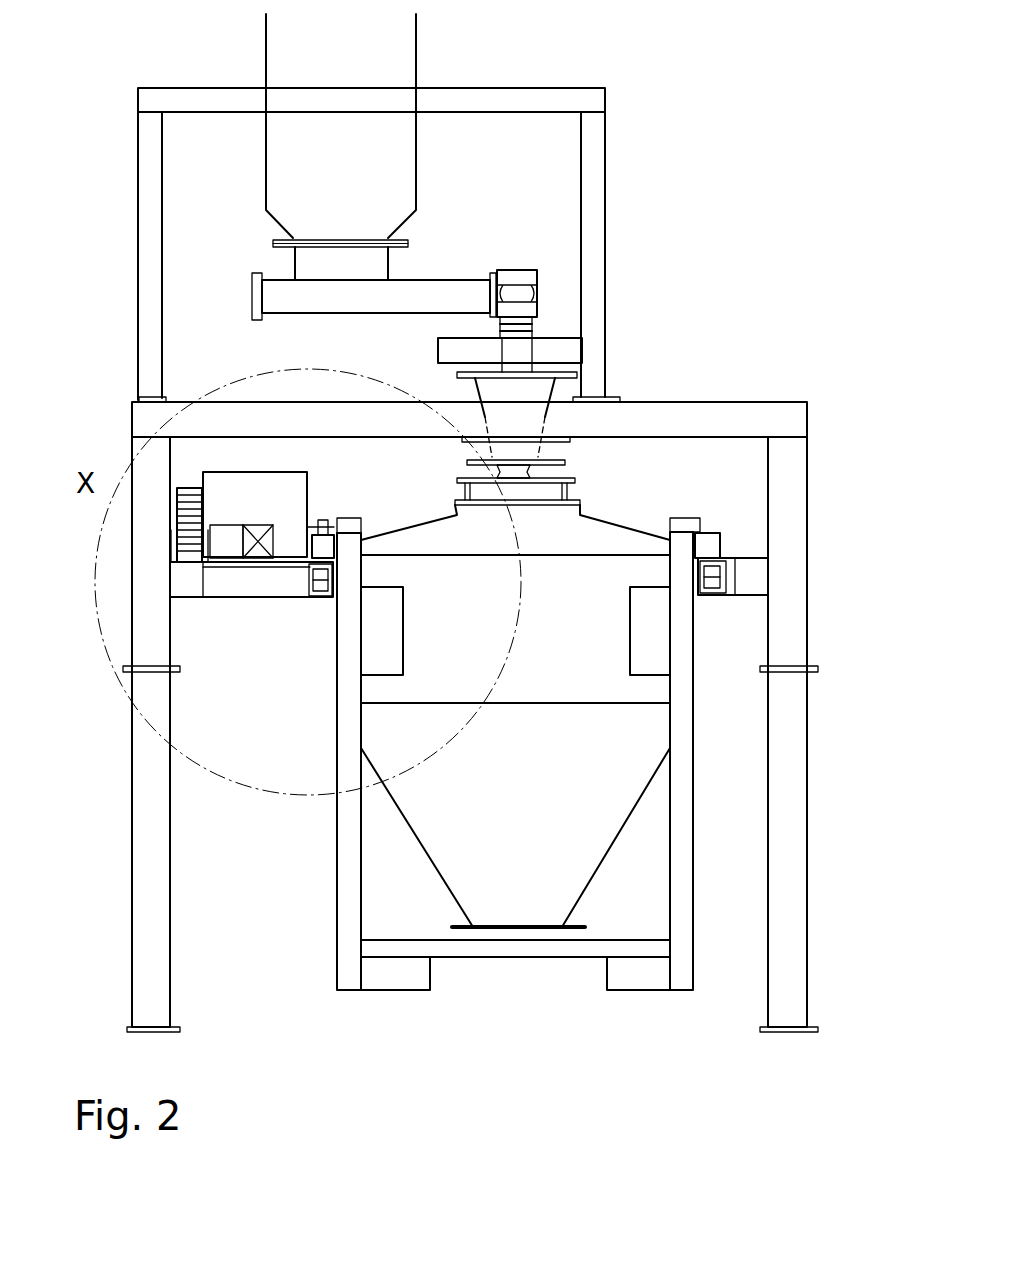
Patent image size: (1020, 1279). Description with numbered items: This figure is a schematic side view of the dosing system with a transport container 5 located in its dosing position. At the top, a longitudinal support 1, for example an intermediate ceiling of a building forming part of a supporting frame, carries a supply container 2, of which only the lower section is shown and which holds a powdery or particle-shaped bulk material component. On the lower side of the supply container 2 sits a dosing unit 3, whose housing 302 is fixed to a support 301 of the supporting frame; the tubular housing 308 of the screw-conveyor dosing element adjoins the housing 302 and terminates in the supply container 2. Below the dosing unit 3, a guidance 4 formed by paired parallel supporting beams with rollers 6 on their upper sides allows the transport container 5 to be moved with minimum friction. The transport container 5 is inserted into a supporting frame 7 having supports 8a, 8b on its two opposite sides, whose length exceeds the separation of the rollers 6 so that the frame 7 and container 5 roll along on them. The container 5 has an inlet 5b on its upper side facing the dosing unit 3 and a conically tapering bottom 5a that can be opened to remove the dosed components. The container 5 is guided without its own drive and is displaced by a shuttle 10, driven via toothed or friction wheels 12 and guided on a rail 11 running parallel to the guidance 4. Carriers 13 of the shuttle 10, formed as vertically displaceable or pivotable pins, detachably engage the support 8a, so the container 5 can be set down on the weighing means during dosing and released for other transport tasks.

The longitudinal support 1 is at (550, 95).
The supply container 2 is at (413, 53).
The dosing unit 3 is at (469, 333).
The tubular housing 308 is at (434, 295).
The support 301 is at (553, 347).
The housing 302 is at (553, 388).
The guidance 4 is at (741, 549).
The transport container 5 is at (605, 753).
The bottom 5a is at (530, 930).
The inlet 5b is at (577, 492).
The roller 6 is at (720, 567).
The supporting frame 7 is at (683, 826).
The support 8a is at (336, 523).
The support 8b is at (710, 540).
The shuttle 10 is at (222, 485).
The rail 11 is at (250, 579).
The toothed or friction wheel 12 is at (177, 522).
The carrier 13 is at (321, 517).